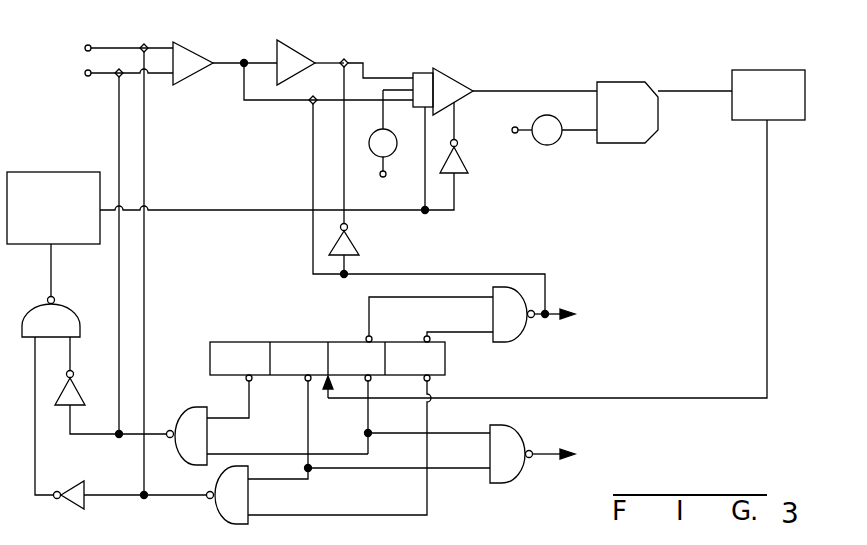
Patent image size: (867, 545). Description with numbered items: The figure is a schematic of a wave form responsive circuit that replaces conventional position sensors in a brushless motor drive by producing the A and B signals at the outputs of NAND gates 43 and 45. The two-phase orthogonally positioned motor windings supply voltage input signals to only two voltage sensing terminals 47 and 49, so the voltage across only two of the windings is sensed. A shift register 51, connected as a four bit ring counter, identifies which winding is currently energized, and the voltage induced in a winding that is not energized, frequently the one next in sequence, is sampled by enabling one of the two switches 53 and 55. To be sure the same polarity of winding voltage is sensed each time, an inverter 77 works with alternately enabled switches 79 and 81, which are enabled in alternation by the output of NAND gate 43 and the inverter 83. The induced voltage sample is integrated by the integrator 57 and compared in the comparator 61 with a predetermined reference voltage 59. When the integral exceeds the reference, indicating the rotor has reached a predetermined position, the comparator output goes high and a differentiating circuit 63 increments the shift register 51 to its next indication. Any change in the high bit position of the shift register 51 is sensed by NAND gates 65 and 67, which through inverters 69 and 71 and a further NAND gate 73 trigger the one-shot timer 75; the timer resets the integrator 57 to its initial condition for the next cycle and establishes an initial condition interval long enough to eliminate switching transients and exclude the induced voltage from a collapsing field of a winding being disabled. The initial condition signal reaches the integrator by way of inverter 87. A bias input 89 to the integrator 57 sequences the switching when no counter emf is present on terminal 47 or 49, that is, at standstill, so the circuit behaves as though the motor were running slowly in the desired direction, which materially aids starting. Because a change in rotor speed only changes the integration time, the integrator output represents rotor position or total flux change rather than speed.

The voltage sensing terminal 47 is at (76, 52).
The voltage sensing terminal 49 is at (76, 86).
The switch 53 is at (116, 78).
The switch 55 is at (176, 43).
The inverter 77 is at (295, 52).
The switch 79 is at (345, 60).
The integrator 57 is at (451, 78).
The switch 81 is at (310, 104).
The bias input 89 is at (396, 148).
The inverter 87 is at (463, 157).
The reference voltage 59 is at (545, 146).
The comparator 61 is at (651, 142).
The differentiating circuit 63 is at (785, 121).
The one-shot timer 75 is at (70, 246).
The NAND gate 73 is at (60, 303).
The inverter 71 is at (76, 376).
The inverter 69 is at (61, 490).
The NAND gate 65 is at (190, 406).
The NAND gate 67 is at (250, 500).
The inverter 83 is at (351, 237).
The shift register 51 is at (344, 342).
The NAND gate 43 is at (514, 338).
The NAND gate 45 is at (497, 484).